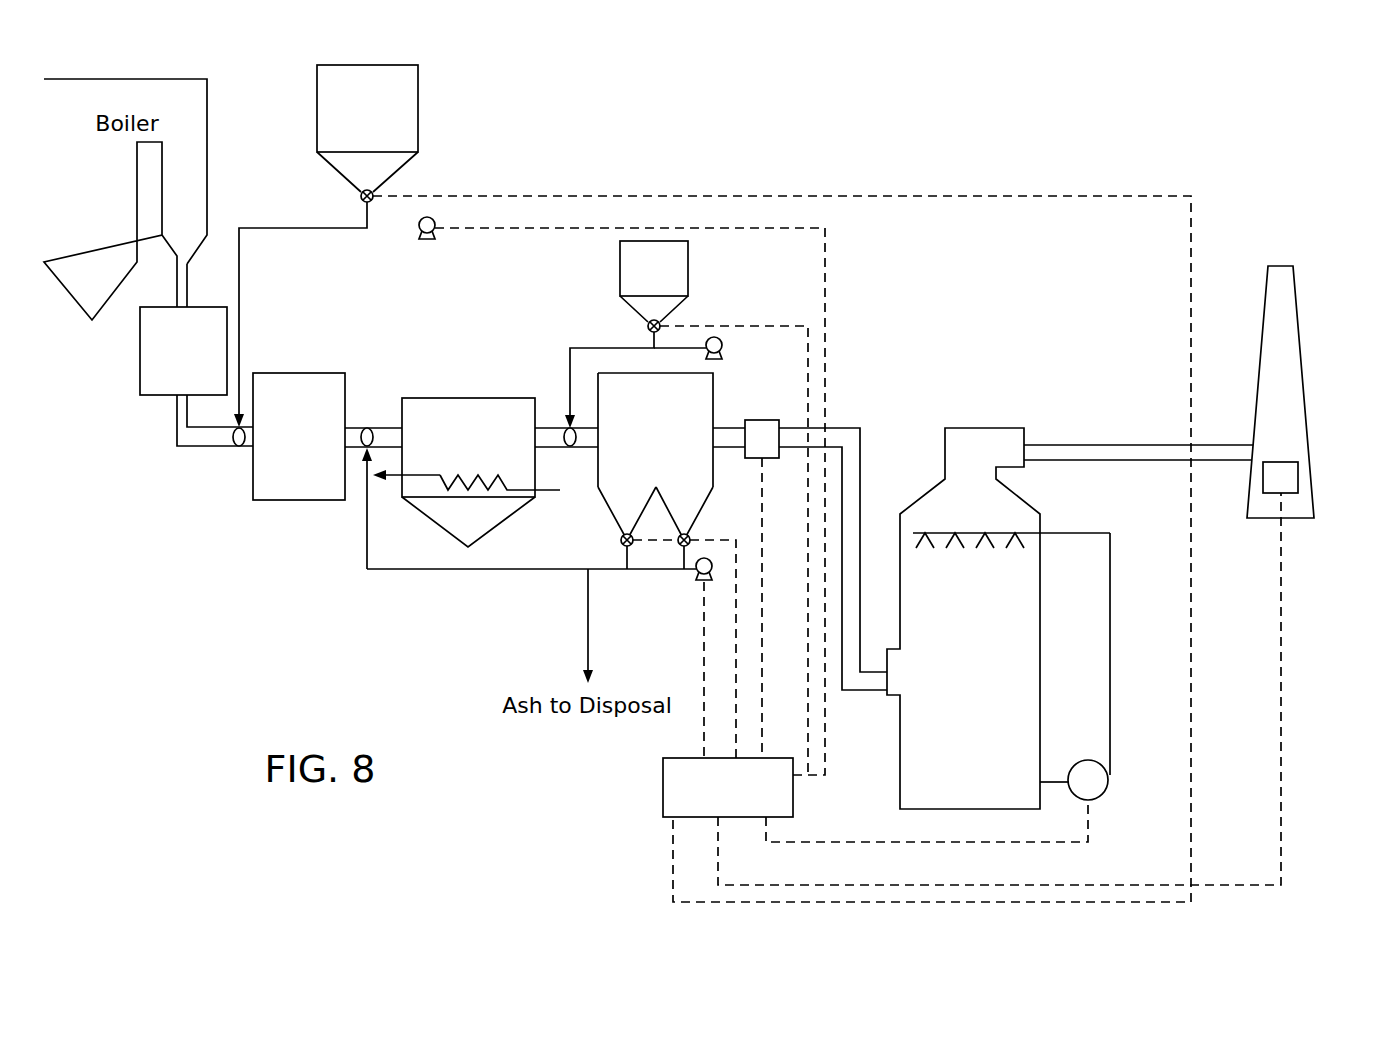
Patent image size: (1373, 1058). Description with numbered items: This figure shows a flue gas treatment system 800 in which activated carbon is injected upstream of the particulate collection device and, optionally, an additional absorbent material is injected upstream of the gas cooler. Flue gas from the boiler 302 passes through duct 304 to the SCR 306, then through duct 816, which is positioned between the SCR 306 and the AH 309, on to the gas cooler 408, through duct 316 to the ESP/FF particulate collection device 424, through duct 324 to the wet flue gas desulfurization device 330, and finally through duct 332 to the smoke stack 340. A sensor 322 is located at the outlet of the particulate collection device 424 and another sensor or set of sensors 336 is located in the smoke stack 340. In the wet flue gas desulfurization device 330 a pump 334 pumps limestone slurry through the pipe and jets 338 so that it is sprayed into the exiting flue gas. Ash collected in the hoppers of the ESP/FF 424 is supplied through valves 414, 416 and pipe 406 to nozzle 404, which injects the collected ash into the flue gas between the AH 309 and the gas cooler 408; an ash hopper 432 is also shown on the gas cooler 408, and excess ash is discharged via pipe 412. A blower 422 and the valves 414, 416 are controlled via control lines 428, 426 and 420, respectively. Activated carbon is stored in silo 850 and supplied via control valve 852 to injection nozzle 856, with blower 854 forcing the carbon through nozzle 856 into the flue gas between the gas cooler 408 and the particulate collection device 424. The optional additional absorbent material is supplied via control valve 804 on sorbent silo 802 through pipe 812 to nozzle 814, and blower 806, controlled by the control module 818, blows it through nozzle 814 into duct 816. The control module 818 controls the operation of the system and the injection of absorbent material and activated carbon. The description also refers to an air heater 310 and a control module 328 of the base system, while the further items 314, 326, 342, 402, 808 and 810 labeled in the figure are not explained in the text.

The system 800 is at (697, 134).
The boiler 302 is at (207, 178).
The duct 304 is at (187, 290).
The SCR module 306 is at (140, 345).
The air heater 309 is at (312, 373).
The air heater 310 is at (558, 492).
The recirculation pump 314 is at (1103, 797).
The duct 316 is at (554, 448).
The sensor 322 is at (762, 420).
The duct 324 is at (860, 428).
The sensor signal line 326 is at (764, 470).
The control module 328 is at (885, 697).
The wet flue gas desulfurization device 330 is at (985, 428).
The duct 332 is at (1090, 445).
The pump 334 is at (1110, 598).
The sensor 336 is at (1272, 496).
The pipe and jets 338 is at (928, 548).
The smoke stack 340 is at (1265, 296).
The cooling medium outlet 342 is at (397, 478).
The damper 402 is at (390, 428).
The nozzle 404 is at (367, 427).
The pipe 406 is at (367, 545).
The gas cooler 408 is at (472, 398).
The pipe 412 is at (586, 634).
The valve 414 is at (621, 541).
The valve 416 is at (690, 536).
The control line 420 is at (643, 550).
The blower 422 is at (700, 583).
The particulate collection device 424 is at (716, 428).
The control line 426 is at (738, 570).
The control line 428 is at (704, 668).
The ash hopper 432 is at (513, 513).
The sorbent silo 802 is at (418, 110).
The control valve 804 is at (373, 194).
The blower 806 is at (427, 241).
The valve signal line 808 is at (535, 196).
The pump signal line 810 is at (500, 229).
The pipe 812 is at (295, 229).
The nozzle 814 is at (236, 447).
The duct 816 is at (185, 447).
The control module 818 is at (793, 803).
The silo 850 is at (688, 262).
The control valve 852 is at (648, 326).
The blower 854 is at (722, 345).
The injection nozzle 856 is at (565, 428).